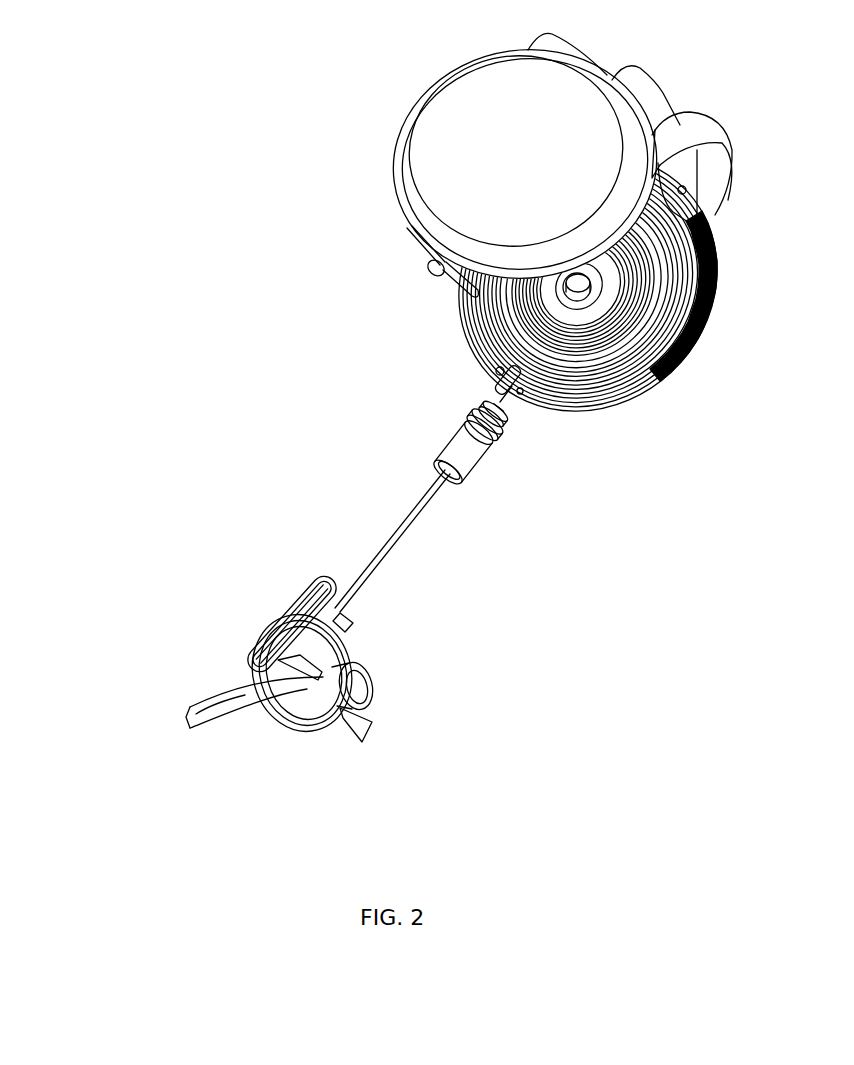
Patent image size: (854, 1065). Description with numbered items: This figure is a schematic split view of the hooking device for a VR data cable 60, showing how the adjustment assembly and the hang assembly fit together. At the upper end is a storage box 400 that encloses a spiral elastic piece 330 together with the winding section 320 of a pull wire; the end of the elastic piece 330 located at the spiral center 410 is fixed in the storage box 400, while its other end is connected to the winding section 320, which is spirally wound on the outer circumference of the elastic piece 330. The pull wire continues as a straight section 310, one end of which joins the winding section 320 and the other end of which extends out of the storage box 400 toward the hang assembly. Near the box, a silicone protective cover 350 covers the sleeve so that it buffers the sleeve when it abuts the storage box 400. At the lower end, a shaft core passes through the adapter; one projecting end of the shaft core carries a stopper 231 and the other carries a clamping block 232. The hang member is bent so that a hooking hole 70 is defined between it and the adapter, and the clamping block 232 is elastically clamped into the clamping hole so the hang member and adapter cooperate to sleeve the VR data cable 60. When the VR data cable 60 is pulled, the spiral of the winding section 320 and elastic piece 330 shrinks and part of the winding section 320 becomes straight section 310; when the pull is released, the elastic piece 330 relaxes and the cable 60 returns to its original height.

The storage box 400 is at (420, 155).
The spiral center 410 is at (455, 295).
The spiral elastic piece 330 is at (470, 343).
The winding section 320 is at (480, 378).
The protective cover 350 is at (445, 448).
The straight section 310 is at (412, 522).
The clamping block 232 is at (250, 648).
The VR data cable 60 is at (185, 718).
The stopper 231 is at (365, 683).
The hooking hole 70 is at (297, 733).